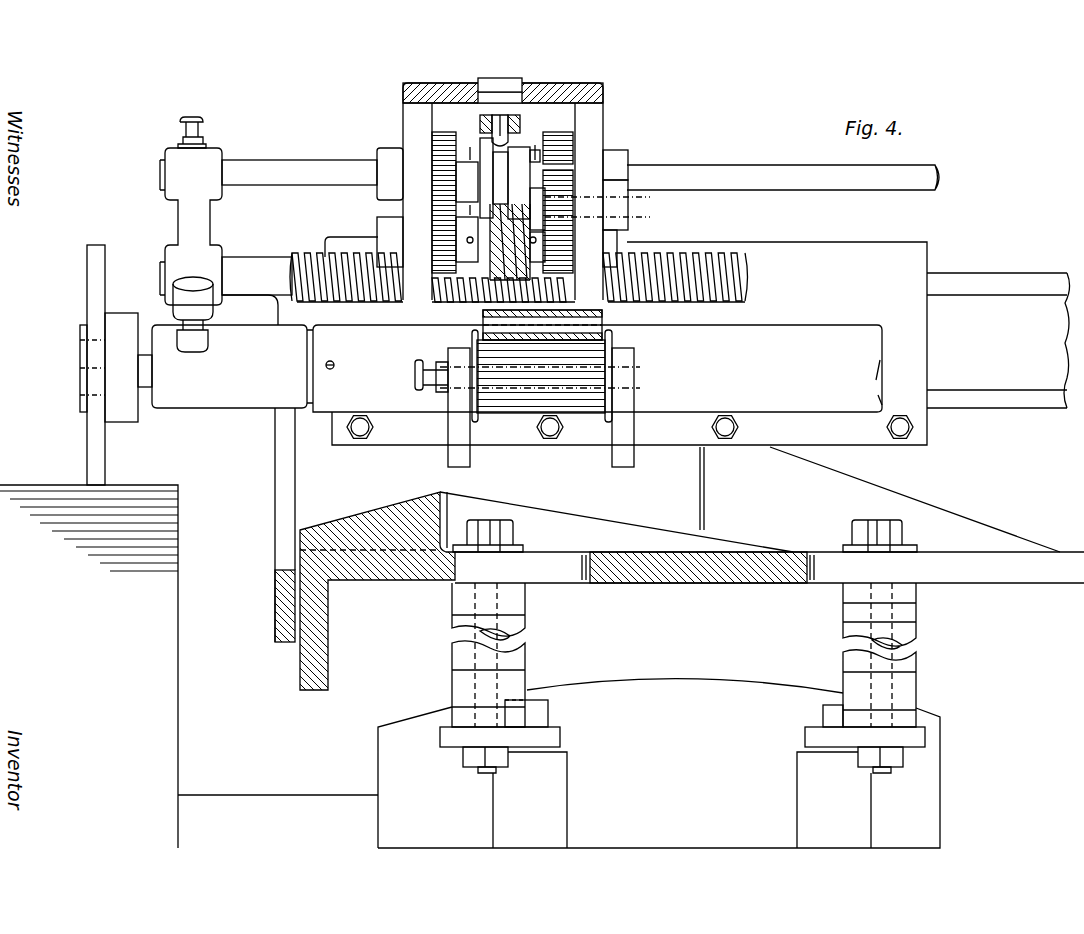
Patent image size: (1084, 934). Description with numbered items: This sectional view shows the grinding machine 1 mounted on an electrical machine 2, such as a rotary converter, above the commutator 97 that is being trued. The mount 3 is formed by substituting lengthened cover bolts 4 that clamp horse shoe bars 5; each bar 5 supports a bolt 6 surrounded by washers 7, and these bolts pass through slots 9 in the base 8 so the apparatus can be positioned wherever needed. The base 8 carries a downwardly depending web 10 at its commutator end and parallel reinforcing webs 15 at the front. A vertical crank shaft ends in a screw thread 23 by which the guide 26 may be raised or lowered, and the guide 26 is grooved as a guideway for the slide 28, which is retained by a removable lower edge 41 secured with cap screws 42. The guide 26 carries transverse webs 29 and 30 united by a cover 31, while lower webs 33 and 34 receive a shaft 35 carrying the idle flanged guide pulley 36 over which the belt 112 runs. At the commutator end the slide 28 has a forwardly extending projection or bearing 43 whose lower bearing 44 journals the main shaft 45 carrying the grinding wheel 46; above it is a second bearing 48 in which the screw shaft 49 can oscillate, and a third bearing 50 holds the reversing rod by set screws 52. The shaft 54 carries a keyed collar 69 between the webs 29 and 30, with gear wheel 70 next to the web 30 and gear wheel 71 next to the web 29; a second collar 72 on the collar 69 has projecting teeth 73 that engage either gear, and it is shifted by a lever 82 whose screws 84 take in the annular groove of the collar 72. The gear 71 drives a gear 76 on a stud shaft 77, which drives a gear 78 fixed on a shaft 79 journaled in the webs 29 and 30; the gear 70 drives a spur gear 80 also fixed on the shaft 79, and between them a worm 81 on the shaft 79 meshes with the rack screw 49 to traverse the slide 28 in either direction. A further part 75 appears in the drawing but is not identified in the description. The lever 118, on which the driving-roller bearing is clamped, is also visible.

The machine 1 is at (769, 585).
The electrical machine 2 is at (659, 777).
The mount 3 is at (527, 636).
The cover bolts 4 is at (530, 700).
The horse shoe bars 5 is at (562, 737).
The bolt 6 is at (475, 773).
The washers 7 is at (452, 652).
The base 8 is at (665, 585).
The slots 9 is at (542, 556).
The web 10 is at (323, 692).
The reinforcing webs 15 is at (512, 510).
The screw thread 23 is at (998, 340).
The guide 26 is at (940, 440).
The slide 28 is at (492, 178).
The transverse web 29 is at (628, 160).
The transverse web 30 is at (400, 133).
The cover 31 is at (403, 95).
The web 33 is at (623, 470).
The web 34 is at (448, 460).
The shaft 35 is at (414, 372).
The idle flanged guide pulley 36 is at (600, 380).
The removable lower edge 41 is at (895, 445).
The cap screws 42 is at (360, 420).
The bearing 43 is at (162, 178).
The bearing 44 is at (248, 410).
The main shaft 45 is at (146, 410).
The grinding wheel 46 is at (92, 440).
The second bearing 48 is at (162, 255).
The screw shaft 49 is at (262, 262).
The third bearing 50 is at (222, 156).
The set screws 52 is at (192, 116).
The shaft 54 is at (310, 160).
The collar 69 is at (510, 216).
The gear wheel 70 is at (444, 130).
The gear wheel 71 is at (605, 150).
The second collar 72 is at (521, 183).
The projecting teeth 73 is at (516, 156).
The collar 75 is at (468, 150).
The gear 76 is at (562, 196).
The stud shaft 77 is at (212, 305).
The gear 78 is at (560, 262).
The shaft 79 is at (376, 227).
The spur gear 80 is at (419, 201).
The worm 81 is at (490, 254).
The lever 82 is at (512, 118).
The screws 84 is at (526, 148).
The commutator 97 is at (155, 568).
The belt 112 is at (476, 319).
The lever 118 is at (274, 622).